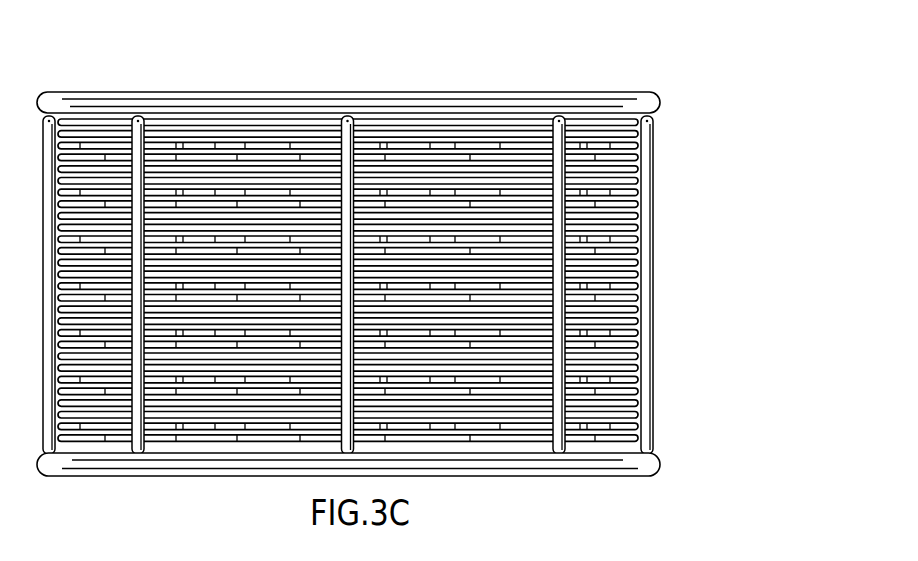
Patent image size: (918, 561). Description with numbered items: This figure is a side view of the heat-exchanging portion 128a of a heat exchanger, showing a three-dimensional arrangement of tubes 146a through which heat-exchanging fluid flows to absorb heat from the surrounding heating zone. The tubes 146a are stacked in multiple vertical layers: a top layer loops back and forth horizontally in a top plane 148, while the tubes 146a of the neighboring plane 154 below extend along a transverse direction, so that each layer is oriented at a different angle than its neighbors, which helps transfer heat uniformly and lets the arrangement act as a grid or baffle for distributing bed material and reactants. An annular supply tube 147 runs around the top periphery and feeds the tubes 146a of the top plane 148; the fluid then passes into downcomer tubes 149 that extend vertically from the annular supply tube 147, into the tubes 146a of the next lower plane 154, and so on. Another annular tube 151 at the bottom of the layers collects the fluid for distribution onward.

The heat-exchanging portion 128a is at (402, 290).
The tubes 146a is at (500, 133).
The annular supply tube 147 is at (260, 105).
The top plane 148 is at (690, 273).
The downcomer tubes 149 is at (395, 246).
The annular tube 151 is at (96, 464).
The neighboring plane 154 is at (653, 128).